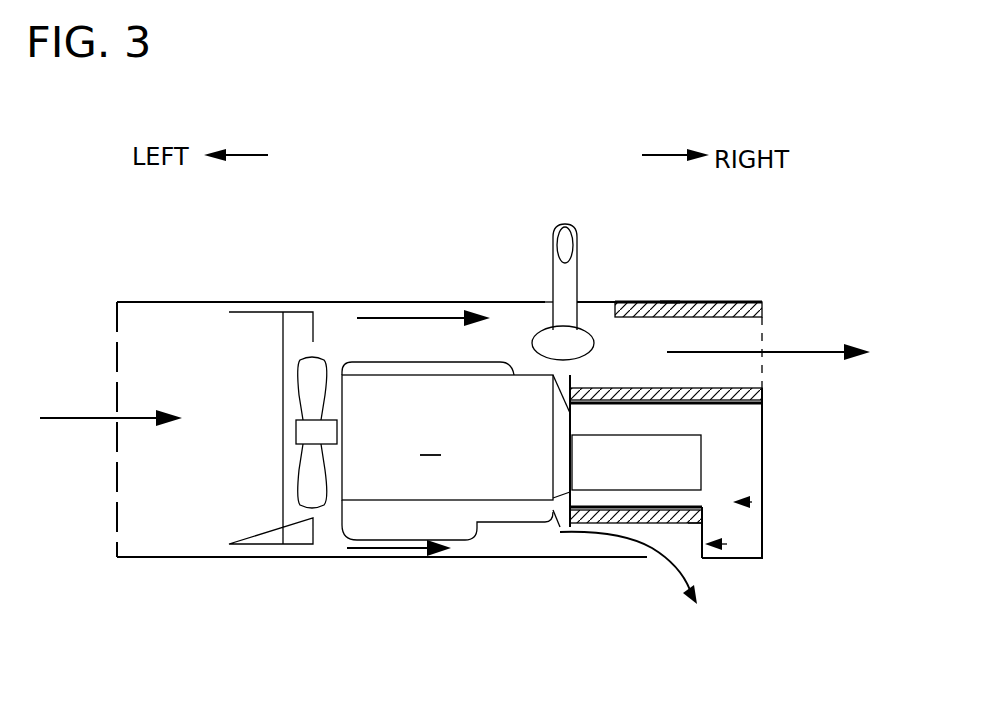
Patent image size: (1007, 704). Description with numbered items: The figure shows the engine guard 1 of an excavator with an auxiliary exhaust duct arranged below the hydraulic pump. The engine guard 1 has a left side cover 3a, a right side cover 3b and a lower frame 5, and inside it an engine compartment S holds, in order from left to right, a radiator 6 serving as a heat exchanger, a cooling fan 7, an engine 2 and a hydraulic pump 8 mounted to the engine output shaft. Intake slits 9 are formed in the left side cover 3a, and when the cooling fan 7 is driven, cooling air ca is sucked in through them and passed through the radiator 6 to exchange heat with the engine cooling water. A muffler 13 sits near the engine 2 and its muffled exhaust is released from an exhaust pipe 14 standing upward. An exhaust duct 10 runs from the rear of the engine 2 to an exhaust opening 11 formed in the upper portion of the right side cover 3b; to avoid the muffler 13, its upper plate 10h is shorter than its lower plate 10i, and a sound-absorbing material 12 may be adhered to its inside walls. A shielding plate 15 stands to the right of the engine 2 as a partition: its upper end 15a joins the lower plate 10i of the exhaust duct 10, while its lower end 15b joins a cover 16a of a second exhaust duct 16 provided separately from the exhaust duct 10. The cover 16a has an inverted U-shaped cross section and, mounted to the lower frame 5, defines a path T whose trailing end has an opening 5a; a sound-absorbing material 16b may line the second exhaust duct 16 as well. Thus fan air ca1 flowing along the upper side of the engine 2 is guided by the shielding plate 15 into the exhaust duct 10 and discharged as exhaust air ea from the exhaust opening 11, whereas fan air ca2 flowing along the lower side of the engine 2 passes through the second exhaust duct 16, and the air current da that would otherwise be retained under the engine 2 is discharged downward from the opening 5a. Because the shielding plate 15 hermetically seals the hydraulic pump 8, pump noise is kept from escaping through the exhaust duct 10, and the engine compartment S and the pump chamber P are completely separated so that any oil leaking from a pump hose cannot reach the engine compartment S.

The engine guard 1 is at (361, 258).
The engine 2 is at (447, 451).
The left side cover 3a is at (117, 314).
The right side cover 3b is at (764, 440).
The lower frame 5 is at (475, 558).
The opening 5a is at (658, 562).
The radiator 6 is at (263, 332).
The cooling fan 7 is at (323, 355).
The hydraulic pump 8 is at (688, 460).
The intake slits 9 is at (117, 400).
The exhaust duct 10 is at (740, 290).
The upper plate 10h is at (672, 302).
The lower plate 10i is at (724, 405).
The exhaust opening 11 is at (765, 347).
The sound-absorbing material 12 is at (644, 388).
The muffler 13 is at (586, 332).
The exhaust pipe 14 is at (568, 225).
The shielding plate 15 is at (592, 412).
The upper end 15a is at (523, 362).
The lower end 15b is at (568, 527).
The second exhaust duct 16 is at (746, 557).
The cover 16a is at (727, 544).
The sound-absorbing material 16b is at (688, 525).
The engine compartment S is at (497, 312).
The pump chamber P is at (752, 500).
The path T is at (598, 550).
The cooling air ca is at (64, 420).
The fan air ca1 is at (413, 320).
The fan air ca2 is at (378, 550).
The exhaust air ea is at (827, 350).
The fan air current da is at (670, 560).